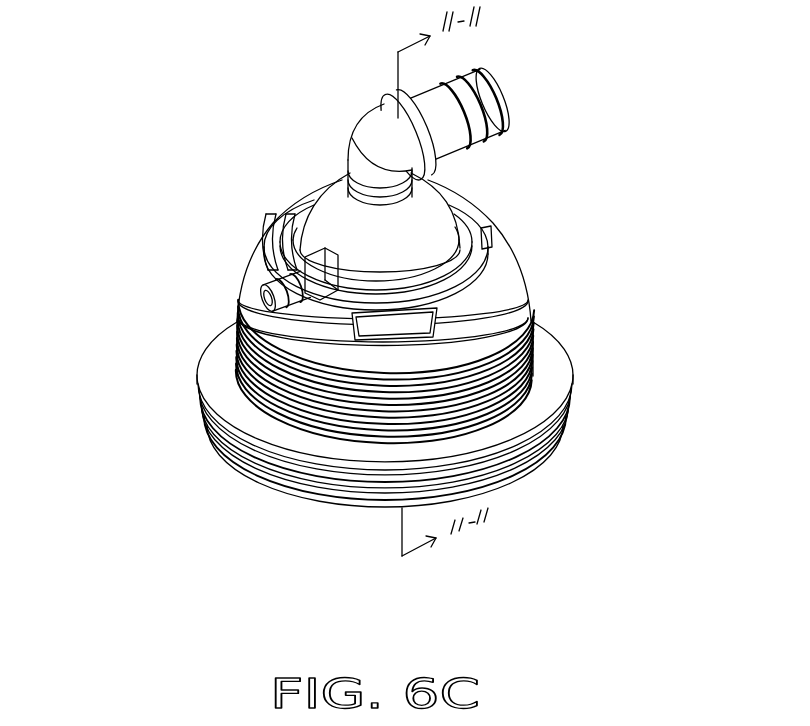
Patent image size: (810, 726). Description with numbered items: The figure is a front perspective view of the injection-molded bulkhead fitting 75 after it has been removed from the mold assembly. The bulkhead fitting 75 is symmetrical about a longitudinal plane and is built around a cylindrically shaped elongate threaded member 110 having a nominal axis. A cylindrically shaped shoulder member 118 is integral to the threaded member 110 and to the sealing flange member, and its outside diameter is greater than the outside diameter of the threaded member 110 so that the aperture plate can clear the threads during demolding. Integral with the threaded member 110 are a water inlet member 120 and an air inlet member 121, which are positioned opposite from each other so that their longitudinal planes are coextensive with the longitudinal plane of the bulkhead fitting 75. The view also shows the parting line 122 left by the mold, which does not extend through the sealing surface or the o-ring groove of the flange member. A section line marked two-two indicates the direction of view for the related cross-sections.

The bulkhead fitting 75 is at (412, 281).
The threaded member 110 is at (520, 270).
The shoulder member 118 is at (503, 423).
The water inlet member 120 is at (520, 105).
The air inlet member 121 is at (258, 300).
The parting line 122 is at (233, 355).